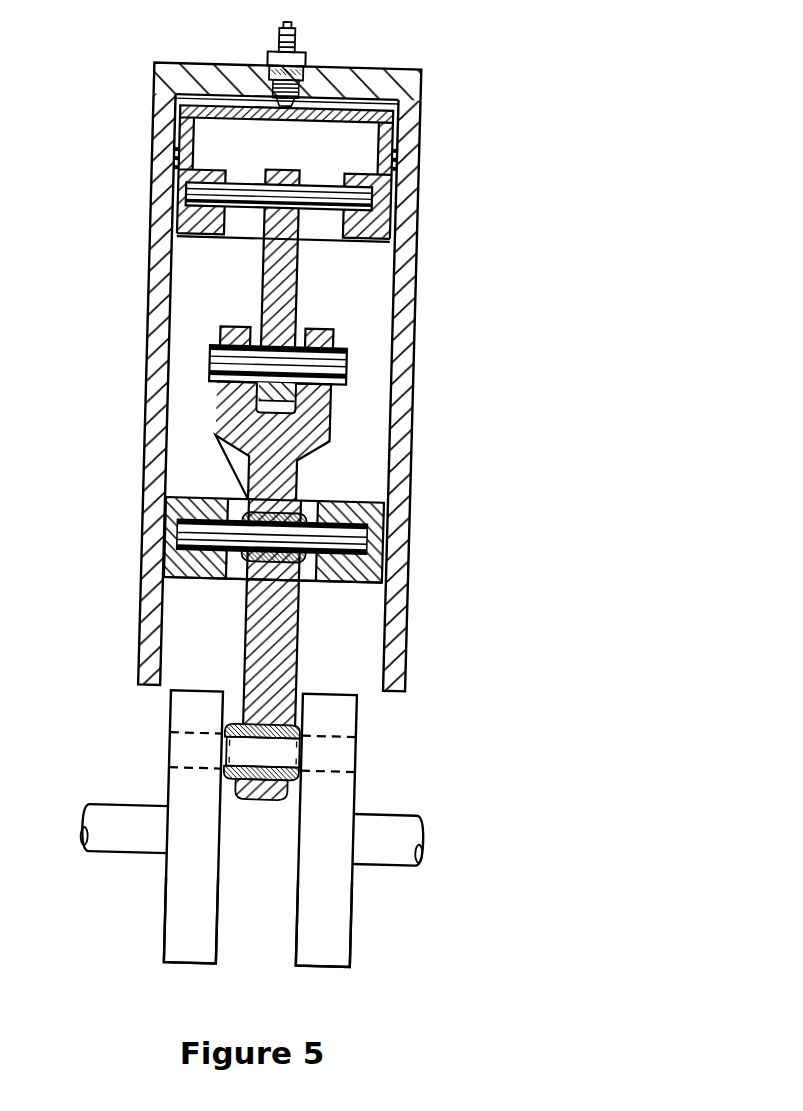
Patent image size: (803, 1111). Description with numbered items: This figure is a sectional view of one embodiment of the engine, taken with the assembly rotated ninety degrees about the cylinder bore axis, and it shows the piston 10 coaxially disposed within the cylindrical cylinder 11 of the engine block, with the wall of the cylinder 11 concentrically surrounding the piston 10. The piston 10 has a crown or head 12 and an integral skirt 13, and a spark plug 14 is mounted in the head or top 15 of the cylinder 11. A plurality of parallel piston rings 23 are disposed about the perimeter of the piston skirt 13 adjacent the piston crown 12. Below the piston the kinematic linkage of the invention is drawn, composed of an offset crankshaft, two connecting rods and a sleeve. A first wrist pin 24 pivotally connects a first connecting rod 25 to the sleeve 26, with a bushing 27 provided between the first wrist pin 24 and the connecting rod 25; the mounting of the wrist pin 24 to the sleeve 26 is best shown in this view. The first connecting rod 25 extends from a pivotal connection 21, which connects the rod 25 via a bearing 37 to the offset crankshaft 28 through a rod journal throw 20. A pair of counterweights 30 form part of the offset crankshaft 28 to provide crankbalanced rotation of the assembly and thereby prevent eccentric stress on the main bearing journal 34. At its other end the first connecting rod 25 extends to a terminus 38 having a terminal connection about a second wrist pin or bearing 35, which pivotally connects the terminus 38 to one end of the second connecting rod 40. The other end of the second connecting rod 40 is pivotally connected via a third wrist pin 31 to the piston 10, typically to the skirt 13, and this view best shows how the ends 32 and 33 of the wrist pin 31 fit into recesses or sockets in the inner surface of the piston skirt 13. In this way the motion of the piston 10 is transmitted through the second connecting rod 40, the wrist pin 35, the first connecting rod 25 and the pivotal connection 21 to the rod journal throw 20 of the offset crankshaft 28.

The piston 10 is at (369, 141).
The cylinder 11 is at (389, 267).
The crown 12 is at (216, 103).
The skirt 13 is at (380, 215).
The spark plug 14 is at (288, 34).
The head 15 is at (367, 74).
The rod journal throw 20 is at (173, 791).
The pivotal connection 21 is at (338, 749).
The piston rings 23 is at (389, 167).
The first wrist pin 24 is at (335, 583).
The first connecting rod 25 is at (273, 607).
The sleeve 26 is at (383, 499).
The bushing 27 is at (304, 511).
The offset crankshaft 28 is at (126, 803).
The counterweight 30 is at (174, 896).
The third wrist pin 31 is at (235, 187).
The wrist pin end 32 is at (172, 160).
The wrist pin end 33 is at (339, 199).
The main bearing journal 34 is at (104, 860).
The second wrist pin 35 is at (206, 367).
The bearing 37 is at (298, 720).
The terminus 38 is at (227, 327).
The second connecting rod 40 is at (272, 264).